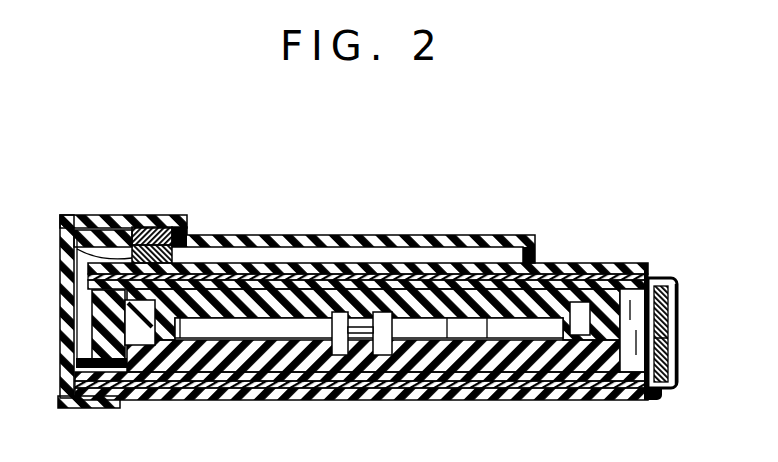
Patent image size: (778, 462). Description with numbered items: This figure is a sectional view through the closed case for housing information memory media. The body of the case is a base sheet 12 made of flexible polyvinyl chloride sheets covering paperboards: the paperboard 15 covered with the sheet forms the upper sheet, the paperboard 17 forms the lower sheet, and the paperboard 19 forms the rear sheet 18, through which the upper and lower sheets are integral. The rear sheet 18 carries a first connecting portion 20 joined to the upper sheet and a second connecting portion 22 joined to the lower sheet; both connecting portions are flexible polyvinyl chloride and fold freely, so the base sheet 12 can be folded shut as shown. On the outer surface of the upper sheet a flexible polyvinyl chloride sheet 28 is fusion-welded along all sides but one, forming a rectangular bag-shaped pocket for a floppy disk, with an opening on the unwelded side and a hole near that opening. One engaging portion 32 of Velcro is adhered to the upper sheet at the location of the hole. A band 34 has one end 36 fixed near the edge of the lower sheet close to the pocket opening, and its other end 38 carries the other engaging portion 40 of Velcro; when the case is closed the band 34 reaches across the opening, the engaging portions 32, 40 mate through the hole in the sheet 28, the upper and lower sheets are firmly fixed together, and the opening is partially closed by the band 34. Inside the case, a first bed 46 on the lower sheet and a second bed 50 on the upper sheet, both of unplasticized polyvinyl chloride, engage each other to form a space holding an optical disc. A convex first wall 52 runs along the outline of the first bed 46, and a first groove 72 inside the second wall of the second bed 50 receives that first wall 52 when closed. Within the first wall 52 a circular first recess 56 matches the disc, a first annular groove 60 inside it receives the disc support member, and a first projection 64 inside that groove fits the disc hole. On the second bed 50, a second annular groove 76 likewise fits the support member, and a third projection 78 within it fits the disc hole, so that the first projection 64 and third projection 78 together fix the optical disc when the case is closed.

The base sheet 12 is at (627, 265).
The paperboard 15 is at (582, 267).
The paperboard 17 is at (208, 393).
The rear sheet 18 is at (678, 290).
The paperboard 19 is at (672, 314).
The first connecting portion 20 is at (656, 277).
The second connecting portion 22 is at (656, 392).
The flexible polyvinyl chloride sheet 28 is at (328, 240).
The one engaging portion 32 is at (67, 243).
The band 34 is at (62, 325).
The one end 36 is at (93, 407).
The other end 38 is at (189, 224).
The other engaging portion 40 is at (150, 228).
The first bed 46 is at (477, 353).
The second bed 50 is at (552, 305).
The first wall 52 is at (666, 338).
The first recess 56 is at (266, 305).
The first annular groove 60 is at (378, 352).
The first projection 64 is at (350, 340).
The first groove 72 is at (162, 386).
The second annular groove 76 is at (363, 313).
The third projection 78 is at (403, 290).